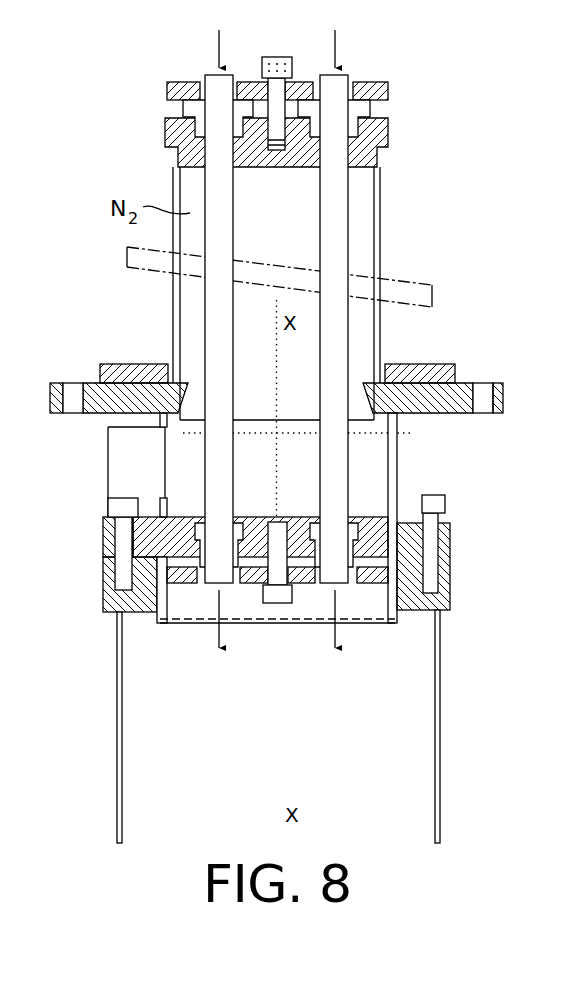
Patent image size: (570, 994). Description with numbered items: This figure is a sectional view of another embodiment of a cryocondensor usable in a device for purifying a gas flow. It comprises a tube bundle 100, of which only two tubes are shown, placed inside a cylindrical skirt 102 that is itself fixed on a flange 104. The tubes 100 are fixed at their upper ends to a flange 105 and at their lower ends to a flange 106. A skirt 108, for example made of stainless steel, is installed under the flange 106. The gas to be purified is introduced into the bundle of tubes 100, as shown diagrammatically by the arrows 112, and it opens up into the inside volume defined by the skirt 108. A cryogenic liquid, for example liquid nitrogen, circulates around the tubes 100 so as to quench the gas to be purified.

The tube bundle 100 is at (328, 235).
The cylindrical skirt 102 is at (380, 263).
The flange 104 is at (465, 385).
The flange 105 is at (388, 127).
The flange 106 is at (450, 580).
The skirt 108 is at (440, 688).
The arrows 112 is at (219, 48).